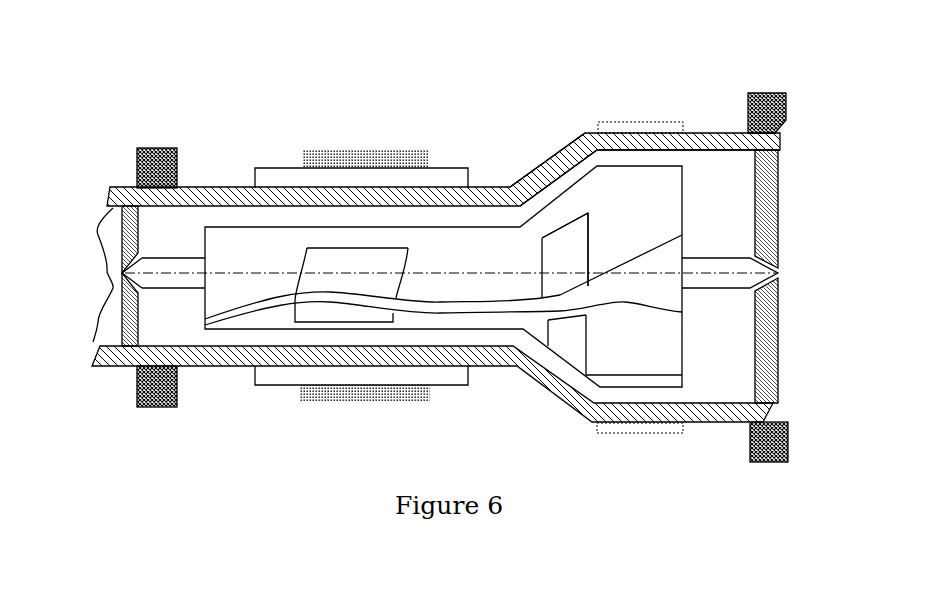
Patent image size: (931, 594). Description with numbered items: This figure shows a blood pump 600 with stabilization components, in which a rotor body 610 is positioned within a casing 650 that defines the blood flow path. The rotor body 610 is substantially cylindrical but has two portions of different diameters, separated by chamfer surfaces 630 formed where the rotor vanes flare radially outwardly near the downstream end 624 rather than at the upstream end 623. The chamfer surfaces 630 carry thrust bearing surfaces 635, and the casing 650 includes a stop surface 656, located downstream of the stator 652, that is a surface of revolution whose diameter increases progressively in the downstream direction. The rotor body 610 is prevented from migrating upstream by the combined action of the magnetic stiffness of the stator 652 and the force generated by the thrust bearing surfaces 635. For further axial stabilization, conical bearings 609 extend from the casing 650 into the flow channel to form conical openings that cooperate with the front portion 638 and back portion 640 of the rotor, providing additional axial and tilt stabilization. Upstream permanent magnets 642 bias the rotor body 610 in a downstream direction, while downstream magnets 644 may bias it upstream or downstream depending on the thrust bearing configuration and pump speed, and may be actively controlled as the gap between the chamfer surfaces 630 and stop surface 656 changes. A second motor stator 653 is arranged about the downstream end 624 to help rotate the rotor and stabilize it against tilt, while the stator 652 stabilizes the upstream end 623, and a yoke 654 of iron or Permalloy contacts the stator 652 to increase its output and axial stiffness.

The pump 600 is at (280, 152).
The conical bearings 609 is at (140, 225).
The rotor body 610 is at (427, 240).
The upstream end 623 is at (220, 243).
The downstream end 624 is at (666, 156).
The chamfer surfaces 630 is at (581, 133).
The thrust bearing surfaces 635 is at (563, 250).
The front portion 638 is at (122, 273).
The back portion 640 is at (710, 258).
The upstream permanent magnets 642 is at (142, 150).
The downstream magnets 644 is at (763, 93).
The casing 650 is at (662, 133).
The stator 652 is at (468, 187).
The second motor stator 653 is at (635, 122).
The yoke 654 is at (343, 150).
The stop surface 656 is at (556, 152).